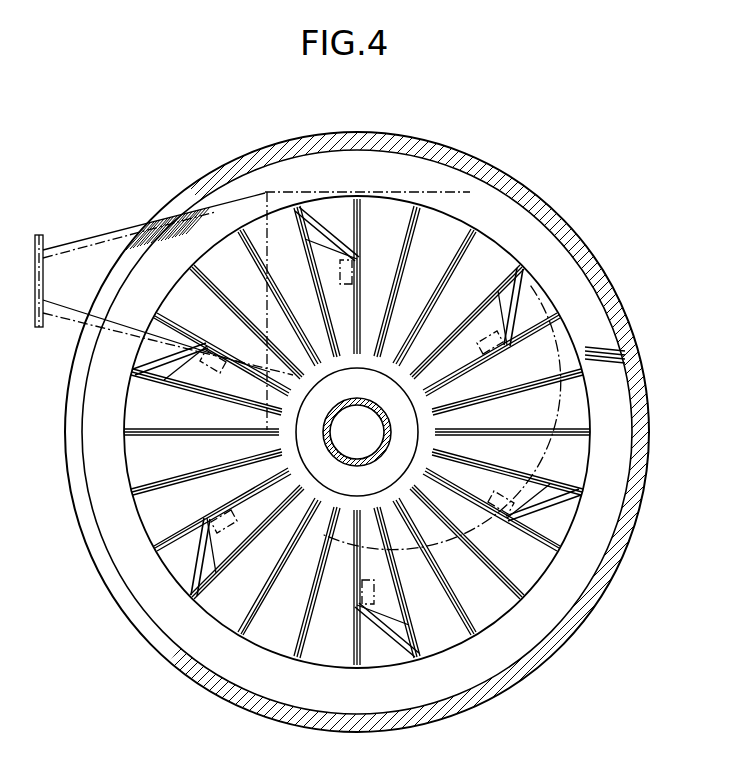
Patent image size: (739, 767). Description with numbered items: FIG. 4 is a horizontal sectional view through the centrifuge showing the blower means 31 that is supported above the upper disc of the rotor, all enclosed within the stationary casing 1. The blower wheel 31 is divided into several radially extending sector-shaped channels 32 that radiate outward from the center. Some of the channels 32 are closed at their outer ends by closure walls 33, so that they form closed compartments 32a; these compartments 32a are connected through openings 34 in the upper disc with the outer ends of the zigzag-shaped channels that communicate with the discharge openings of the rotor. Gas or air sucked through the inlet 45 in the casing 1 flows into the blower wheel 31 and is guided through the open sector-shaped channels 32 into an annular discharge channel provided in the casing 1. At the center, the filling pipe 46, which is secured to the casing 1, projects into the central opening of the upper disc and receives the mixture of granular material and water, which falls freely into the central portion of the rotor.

The stationary casing 1 is at (630, 367).
The blower means 31 is at (589, 468).
The sector-shaped channels 32 is at (417, 205).
The closed compartments 32a is at (342, 295).
The closure walls 33 is at (307, 223).
The openings 34 is at (197, 377).
The inlet 45 is at (81, 257).
The filling pipe 46 is at (384, 418).